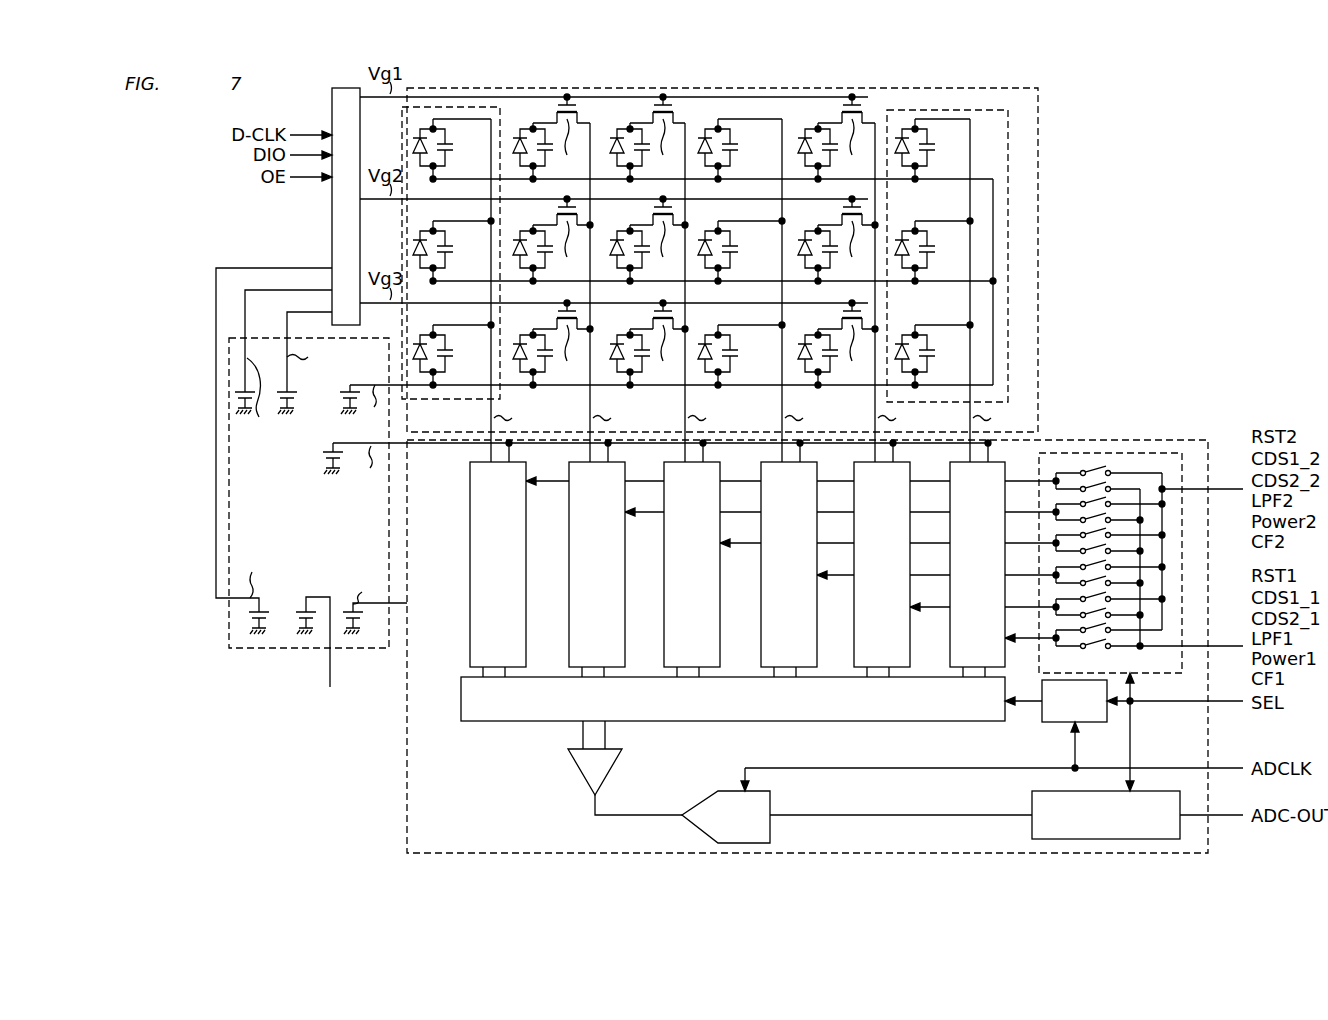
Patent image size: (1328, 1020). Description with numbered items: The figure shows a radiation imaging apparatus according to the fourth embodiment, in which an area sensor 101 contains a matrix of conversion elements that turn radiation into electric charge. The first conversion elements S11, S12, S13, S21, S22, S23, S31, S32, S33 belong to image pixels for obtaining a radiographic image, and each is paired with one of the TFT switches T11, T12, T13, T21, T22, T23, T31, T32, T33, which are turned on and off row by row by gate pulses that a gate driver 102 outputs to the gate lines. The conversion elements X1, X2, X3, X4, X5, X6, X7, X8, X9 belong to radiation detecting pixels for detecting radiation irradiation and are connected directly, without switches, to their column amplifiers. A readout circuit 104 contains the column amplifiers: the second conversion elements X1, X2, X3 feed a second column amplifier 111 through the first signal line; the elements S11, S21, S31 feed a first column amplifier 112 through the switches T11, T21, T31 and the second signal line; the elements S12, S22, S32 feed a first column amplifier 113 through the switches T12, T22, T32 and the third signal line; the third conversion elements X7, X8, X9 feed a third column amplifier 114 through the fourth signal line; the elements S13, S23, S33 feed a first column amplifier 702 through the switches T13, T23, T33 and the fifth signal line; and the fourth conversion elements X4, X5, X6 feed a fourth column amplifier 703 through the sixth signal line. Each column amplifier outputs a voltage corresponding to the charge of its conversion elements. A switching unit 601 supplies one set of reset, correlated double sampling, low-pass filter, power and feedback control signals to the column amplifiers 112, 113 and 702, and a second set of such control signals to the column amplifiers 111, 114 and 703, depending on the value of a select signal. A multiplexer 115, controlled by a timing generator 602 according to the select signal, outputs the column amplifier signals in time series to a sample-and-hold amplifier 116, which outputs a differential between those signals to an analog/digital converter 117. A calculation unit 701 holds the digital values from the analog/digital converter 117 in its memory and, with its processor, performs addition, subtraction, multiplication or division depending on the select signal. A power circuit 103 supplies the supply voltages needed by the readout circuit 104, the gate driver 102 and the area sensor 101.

The area sensor 101 is at (975, 91).
The gate driver 102 is at (329, 106).
The power circuit 103 is at (262, 652).
The readout circuit 104 is at (408, 820).
The column amplifier 111 is at (470, 620).
The column amplifier 112 is at (569, 620).
The column amplifier 113 is at (664, 620).
The column amplifier 114 is at (761, 620).
The column amplifier 702 is at (854, 620).
The column amplifier 703 is at (950, 620).
The multiplexer 115 is at (480, 722).
The sample-and-hold amplifier 116 is at (578, 780).
The analog/digital converter 117 is at (776, 805).
The switching unit 601 is at (1103, 452).
The timing generator 602 is at (1040, 724).
The calculation unit 701 is at (1032, 822).
The second conversion element X1 is at (443, 134).
The second conversion element X2 is at (443, 236).
The second conversion element X3 is at (443, 340).
The fourth conversion element X4 is at (925, 134).
The fourth conversion element X5 is at (925, 236).
The fourth conversion element X6 is at (925, 340).
The third conversion element X7 is at (728, 134).
The third conversion element X8 is at (728, 236).
The third conversion element X9 is at (728, 340).
The first conversion element S11 is at (526, 138).
The first conversion element S12 is at (623, 138).
The first conversion element S13 is at (811, 138).
The first conversion element S21 is at (526, 240).
The first conversion element S22 is at (623, 240).
The first conversion element S23 is at (811, 240).
The first conversion element S31 is at (526, 344).
The first conversion element S32 is at (623, 344).
The first conversion element S33 is at (811, 344).
The TFT switch T11 is at (561, 135).
The TFT switch T12 is at (657, 135).
The TFT switch T13 is at (846, 135).
The TFT switch T21 is at (563, 237).
The TFT switch T22 is at (659, 237).
The TFT switch T23 is at (848, 237).
The TFT switch T31 is at (563, 341).
The TFT switch T32 is at (659, 341).
The TFT switch T33 is at (848, 341).